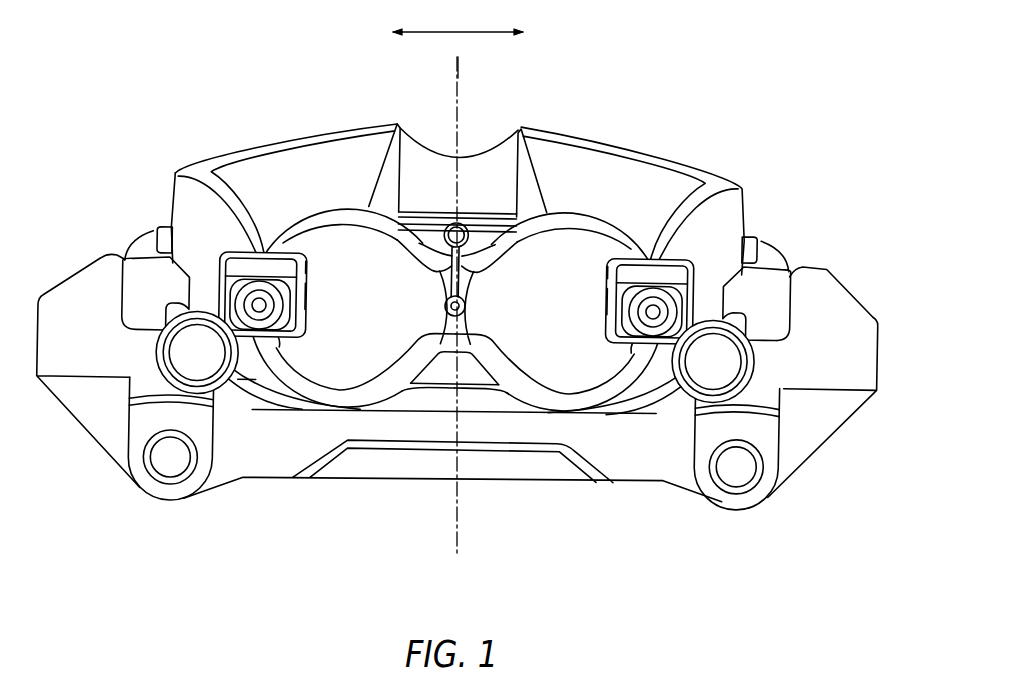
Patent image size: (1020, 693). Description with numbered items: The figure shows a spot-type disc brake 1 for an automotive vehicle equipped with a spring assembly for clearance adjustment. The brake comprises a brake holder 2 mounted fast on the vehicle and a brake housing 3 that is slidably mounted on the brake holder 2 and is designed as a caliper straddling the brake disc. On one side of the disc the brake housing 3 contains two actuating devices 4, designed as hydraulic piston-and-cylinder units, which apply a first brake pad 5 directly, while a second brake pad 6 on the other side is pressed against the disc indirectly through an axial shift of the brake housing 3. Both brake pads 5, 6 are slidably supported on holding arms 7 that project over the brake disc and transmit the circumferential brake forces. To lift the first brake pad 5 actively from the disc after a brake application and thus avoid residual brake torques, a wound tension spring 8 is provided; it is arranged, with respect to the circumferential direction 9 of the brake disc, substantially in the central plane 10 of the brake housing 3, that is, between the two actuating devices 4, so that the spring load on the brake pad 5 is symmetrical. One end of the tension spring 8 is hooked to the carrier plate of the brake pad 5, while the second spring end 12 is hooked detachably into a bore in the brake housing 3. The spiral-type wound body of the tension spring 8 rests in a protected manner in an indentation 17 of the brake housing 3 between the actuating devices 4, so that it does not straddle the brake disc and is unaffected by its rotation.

The spot-type disc brake 1 is at (737, 75).
The brake holder 2 is at (448, 88).
The brake housing 3 is at (562, 156).
The actuating device 4 is at (310, 362).
The first brake pad 5 is at (730, 300).
The second brake pad 6 is at (771, 247).
The holding arms 7 is at (88, 293).
The tension spring 8 is at (499, 258).
The circumferential direction 9 is at (428, 32).
The central plane 10 is at (460, 68).
The second spring end 12 is at (443, 304).
The indentation 17 is at (420, 215).